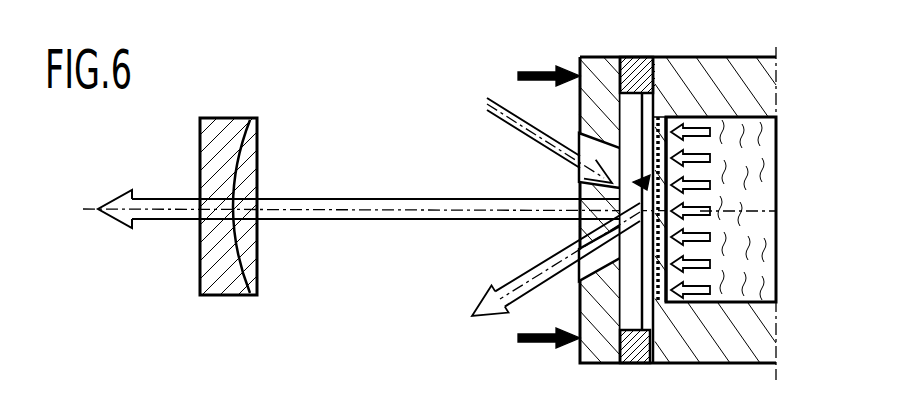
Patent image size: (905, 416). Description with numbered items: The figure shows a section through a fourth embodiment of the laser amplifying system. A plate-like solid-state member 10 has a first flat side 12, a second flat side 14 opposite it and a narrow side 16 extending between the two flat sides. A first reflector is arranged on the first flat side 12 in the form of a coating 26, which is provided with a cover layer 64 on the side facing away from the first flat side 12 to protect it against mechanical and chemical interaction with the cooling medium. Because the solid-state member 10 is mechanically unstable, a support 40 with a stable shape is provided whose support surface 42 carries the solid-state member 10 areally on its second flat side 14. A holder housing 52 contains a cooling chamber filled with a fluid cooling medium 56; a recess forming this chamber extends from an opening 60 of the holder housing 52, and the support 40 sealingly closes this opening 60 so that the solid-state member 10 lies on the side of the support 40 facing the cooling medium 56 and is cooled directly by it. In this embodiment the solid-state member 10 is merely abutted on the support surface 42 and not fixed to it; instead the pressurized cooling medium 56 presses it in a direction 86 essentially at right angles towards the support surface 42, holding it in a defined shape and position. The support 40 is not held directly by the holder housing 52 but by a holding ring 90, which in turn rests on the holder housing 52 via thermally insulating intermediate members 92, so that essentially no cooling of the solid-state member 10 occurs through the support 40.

The solid-state member 10 is at (598, 181).
The support 40 is at (592, 248).
The holding ring 90 is at (598, 92).
The opening 60 is at (634, 104).
The support surface 42 is at (655, 118).
The direction 86 is at (698, 120).
The holder housing 52 is at (768, 88).
The fluid cooling medium 56 is at (730, 151).
The cover layer 64 is at (670, 173).
The coating 26 is at (680, 250).
The second flat side 14 is at (618, 312).
The thermally insulating intermediate members 92 is at (632, 364).
The narrow side 16 is at (648, 295).
The first flat side 12 is at (662, 292).